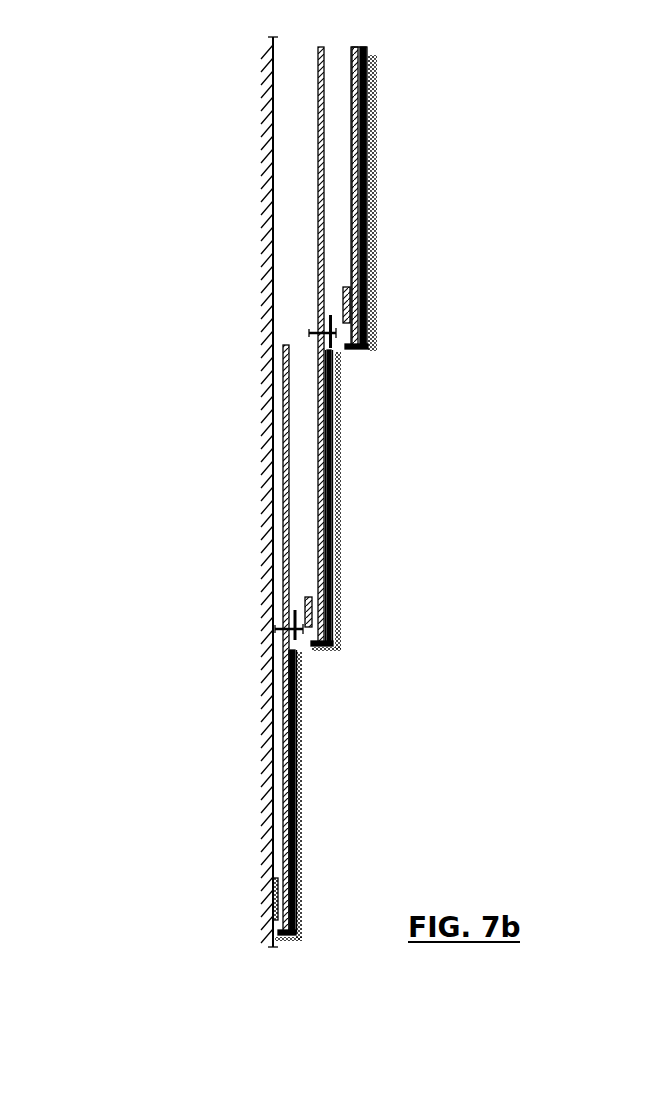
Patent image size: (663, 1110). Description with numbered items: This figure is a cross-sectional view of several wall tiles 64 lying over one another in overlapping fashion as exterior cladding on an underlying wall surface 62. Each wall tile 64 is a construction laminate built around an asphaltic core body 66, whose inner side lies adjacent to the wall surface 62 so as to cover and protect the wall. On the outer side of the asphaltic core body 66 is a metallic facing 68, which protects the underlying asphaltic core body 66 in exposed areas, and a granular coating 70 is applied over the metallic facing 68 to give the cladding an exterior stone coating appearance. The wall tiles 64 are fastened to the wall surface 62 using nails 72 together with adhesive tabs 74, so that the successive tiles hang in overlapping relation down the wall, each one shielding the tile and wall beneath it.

The wall surface 62 is at (273, 150).
The wall tile 64 is at (338, 476).
The asphaltic core body 66 is at (355, 48).
The metallic facing 68 is at (372, 205).
The granular coating 70 is at (378, 150).
The nails 72 is at (336, 350).
The adhesive tabs 74 is at (346, 298).